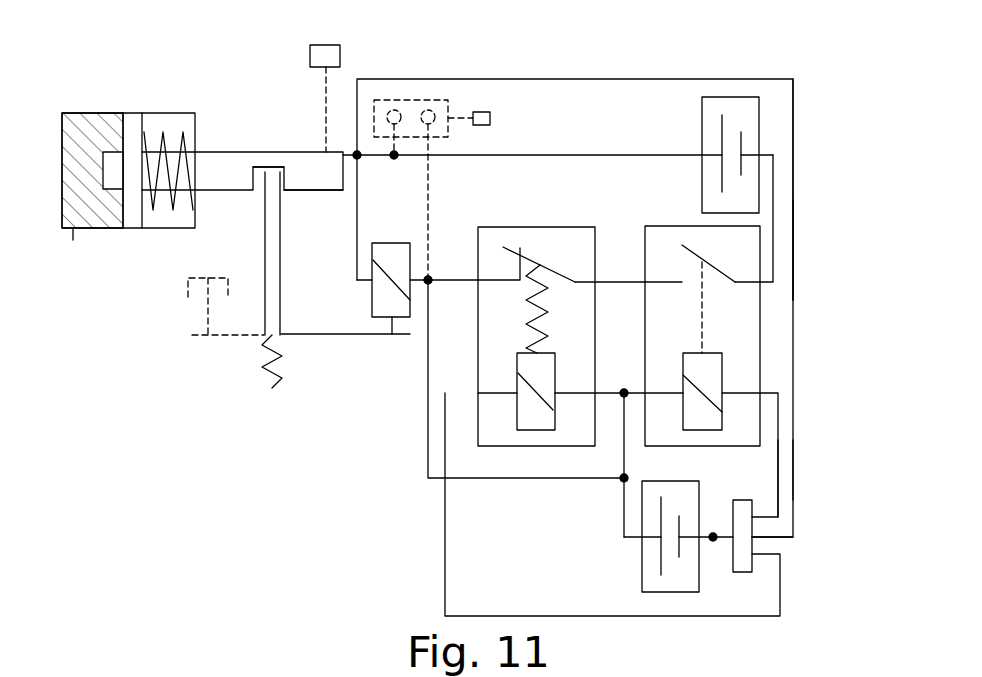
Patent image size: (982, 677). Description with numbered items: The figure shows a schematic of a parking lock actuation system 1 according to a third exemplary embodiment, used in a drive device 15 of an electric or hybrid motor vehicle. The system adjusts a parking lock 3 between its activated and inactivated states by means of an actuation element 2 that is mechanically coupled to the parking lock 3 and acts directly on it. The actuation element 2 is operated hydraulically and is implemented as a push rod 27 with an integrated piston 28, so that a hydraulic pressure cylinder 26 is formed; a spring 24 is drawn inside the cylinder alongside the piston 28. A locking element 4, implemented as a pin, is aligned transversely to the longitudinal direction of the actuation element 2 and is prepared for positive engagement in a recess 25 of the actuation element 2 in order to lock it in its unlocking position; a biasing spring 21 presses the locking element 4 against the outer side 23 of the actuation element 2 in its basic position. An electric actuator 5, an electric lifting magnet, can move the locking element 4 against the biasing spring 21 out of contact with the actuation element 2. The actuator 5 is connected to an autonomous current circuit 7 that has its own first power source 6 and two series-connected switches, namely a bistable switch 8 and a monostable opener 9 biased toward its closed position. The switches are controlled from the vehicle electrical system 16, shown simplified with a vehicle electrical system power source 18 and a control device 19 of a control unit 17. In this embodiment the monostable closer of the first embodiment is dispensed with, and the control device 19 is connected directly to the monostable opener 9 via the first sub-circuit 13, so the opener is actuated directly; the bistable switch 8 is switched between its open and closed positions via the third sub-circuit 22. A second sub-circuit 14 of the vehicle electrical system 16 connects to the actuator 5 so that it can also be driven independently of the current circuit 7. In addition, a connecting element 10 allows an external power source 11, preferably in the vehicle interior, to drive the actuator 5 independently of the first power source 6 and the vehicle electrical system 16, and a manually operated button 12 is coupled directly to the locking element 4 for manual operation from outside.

The parking lock actuation system 1 is at (650, 72).
The actuation element 2 is at (207, 163).
The push rod 27 is at (242, 130).
The parking lock 3 is at (320, 57).
The locking element 4 is at (277, 268).
The electric actuator 5 is at (392, 258).
The first power source 6 is at (760, 115).
The current circuit 7 is at (648, 155).
The bistable switch 8 is at (745, 308).
The monostable opener 9 is at (573, 228).
The connecting element 10 is at (408, 112).
The external power source 11 is at (490, 118).
The button 12 is at (200, 278).
The first sub-circuit 13 is at (443, 517).
The second sub-circuit 14 is at (793, 232).
The drive device 15 is at (813, 62).
The vehicle electrical system 16 is at (800, 473).
The control unit 17 is at (803, 513).
The vehicle electrical system power source 18 is at (700, 577).
The control device 19 is at (745, 542).
The biasing spring 21 is at (271, 388).
The third sub-circuit 22 is at (781, 412).
The outer side 23 is at (316, 190).
The spring 24 is at (160, 122).
The recess 25 is at (257, 175).
The hydraulic pressure cylinder 26 is at (105, 113).
The piston 28 is at (130, 220).